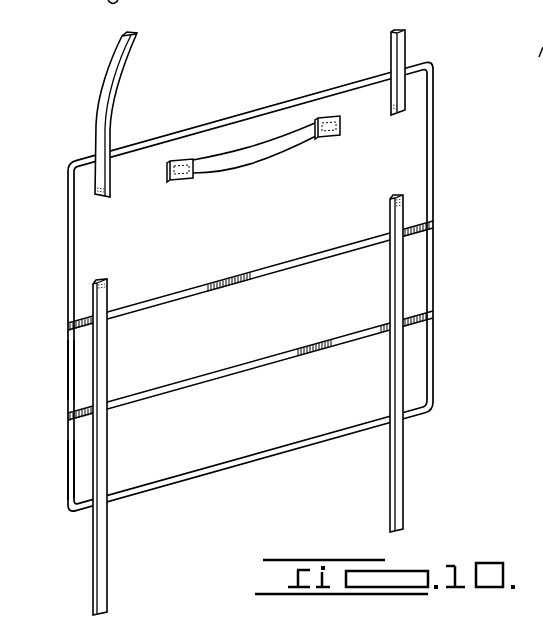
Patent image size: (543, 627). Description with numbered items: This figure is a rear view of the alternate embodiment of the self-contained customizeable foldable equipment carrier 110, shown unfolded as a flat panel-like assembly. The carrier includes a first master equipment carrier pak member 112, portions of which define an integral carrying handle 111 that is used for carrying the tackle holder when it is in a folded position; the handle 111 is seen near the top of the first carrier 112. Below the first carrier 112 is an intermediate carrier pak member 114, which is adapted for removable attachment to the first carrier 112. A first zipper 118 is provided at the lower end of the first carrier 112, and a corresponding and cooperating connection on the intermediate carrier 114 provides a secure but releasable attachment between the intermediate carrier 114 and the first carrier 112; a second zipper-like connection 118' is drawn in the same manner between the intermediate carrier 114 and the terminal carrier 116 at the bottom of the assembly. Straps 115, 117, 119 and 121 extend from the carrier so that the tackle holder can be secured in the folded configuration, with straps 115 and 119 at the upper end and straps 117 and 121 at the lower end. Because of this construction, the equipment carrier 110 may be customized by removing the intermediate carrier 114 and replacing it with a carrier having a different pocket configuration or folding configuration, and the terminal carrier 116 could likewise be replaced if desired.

The panel assembly 110 is at (72, 82).
The integral carrying handle 111 is at (266, 152).
The first master equipment carrier pak member 112 is at (58, 240).
The intermediate carrier pak member 114 is at (58, 370).
The strap 115 is at (402, 40).
The terminal carrier 116 is at (58, 470).
The strap 117 is at (398, 461).
The first zipper 118 is at (293, 265).
The lower horizontal rail 118' is at (293, 363).
The strap 119 is at (122, 60).
The strap 121 is at (102, 548).